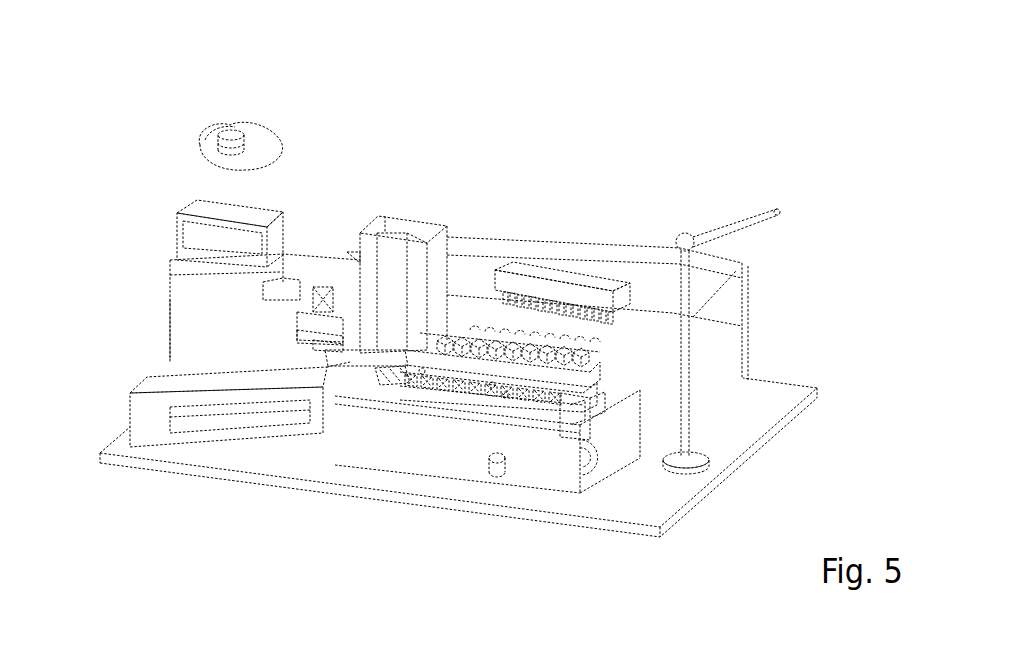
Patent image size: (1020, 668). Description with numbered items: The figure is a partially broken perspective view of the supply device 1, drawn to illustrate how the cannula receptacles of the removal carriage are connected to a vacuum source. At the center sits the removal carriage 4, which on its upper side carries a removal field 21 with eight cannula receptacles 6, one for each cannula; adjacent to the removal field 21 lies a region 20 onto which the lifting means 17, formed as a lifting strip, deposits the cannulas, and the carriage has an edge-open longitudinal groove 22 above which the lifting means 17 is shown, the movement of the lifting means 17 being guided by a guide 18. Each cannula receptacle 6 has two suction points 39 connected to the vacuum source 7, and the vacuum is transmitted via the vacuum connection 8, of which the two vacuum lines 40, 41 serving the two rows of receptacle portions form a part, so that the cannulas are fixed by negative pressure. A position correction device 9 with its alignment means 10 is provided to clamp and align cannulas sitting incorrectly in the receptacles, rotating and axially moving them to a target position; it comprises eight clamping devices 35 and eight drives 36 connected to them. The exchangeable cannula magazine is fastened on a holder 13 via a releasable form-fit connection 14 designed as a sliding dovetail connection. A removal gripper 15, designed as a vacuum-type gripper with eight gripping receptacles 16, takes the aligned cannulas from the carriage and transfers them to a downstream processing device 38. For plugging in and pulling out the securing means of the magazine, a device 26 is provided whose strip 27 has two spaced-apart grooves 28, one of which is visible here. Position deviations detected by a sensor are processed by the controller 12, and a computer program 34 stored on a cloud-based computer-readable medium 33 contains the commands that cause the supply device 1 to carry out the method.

The supply device 1 is at (276, 47).
The removal carriage 4 is at (458, 470).
The cannula receptacles 6 is at (502, 259).
The vacuum source 7 is at (500, 516).
The vacuum connection 8 is at (570, 481).
The position correction device 9 is at (602, 366).
The alignment means 10 is at (567, 242).
The controller 12 is at (246, 230).
The holder 13 is at (397, 228).
The releasable form-fit connection 14 is at (412, 153).
The removal gripper 15 is at (721, 296).
The gripping receptacles 16 is at (590, 245).
The lifting means 17 is at (200, 299).
The guide 18 is at (208, 259).
The region 20 is at (355, 447).
The removal field 21 is at (513, 249).
The longitudinal groove 22 is at (240, 450).
The device for removing and attaching the securing means 26 is at (102, 330).
The strip 27 is at (184, 315).
The grooves 28 is at (180, 366).
The computer-readable medium 33 is at (227, 110).
The computer program 34 is at (227, 79).
The clamping devices 35 is at (623, 405).
The drives 36 is at (633, 287).
The downstream processing device 38 is at (800, 321).
The suction points 39 is at (454, 469).
The vacuum line 40 is at (657, 473).
The vacuum line 41 is at (677, 453).